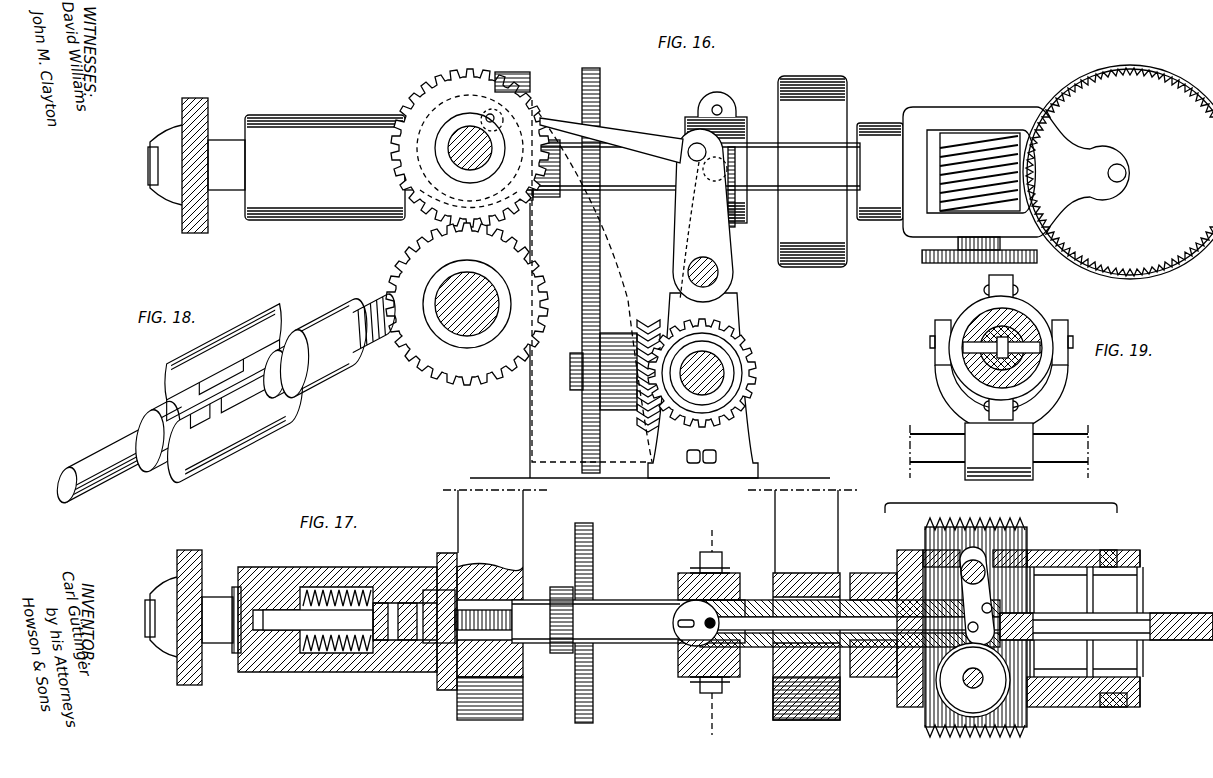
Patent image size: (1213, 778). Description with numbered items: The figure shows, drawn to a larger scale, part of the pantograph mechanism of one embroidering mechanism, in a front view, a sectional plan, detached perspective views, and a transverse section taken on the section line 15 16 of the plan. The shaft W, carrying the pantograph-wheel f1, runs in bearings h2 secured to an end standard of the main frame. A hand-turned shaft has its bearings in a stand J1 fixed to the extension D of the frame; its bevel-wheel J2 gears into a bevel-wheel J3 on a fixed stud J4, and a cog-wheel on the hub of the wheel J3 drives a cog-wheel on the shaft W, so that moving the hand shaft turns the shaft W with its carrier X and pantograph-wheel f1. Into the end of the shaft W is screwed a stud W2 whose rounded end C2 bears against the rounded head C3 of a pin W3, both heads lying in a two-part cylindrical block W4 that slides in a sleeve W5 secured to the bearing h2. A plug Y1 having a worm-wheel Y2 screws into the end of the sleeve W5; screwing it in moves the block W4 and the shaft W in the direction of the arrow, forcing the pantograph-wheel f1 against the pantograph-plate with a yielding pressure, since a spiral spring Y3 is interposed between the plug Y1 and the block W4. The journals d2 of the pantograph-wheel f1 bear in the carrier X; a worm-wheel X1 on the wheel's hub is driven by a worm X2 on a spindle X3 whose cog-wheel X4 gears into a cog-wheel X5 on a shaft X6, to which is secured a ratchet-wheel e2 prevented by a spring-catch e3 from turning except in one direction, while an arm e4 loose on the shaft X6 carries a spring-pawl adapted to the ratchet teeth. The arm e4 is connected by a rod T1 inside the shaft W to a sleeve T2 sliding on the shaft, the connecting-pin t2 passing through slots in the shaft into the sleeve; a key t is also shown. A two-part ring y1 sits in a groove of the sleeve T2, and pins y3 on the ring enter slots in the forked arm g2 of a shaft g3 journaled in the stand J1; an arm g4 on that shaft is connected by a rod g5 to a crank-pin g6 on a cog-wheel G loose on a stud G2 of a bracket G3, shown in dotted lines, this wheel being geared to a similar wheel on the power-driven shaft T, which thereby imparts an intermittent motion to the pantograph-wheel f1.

In FIG. 16, the worm-wheel Y2 is at (178, 153).
In FIG. 17, the worm-wheel Y2 is at (173, 606).
In FIG. 16, the plug Y1 is at (238, 172).
In FIG. 17, the plug Y1 is at (221, 620).
In FIG. 17, the spiral spring Y3 is at (337, 623).
In FIG. 16, the sleeve W5 is at (325, 167).
In FIG. 17, the sleeve W5 is at (337, 570).
In FIG. 18, the two-part cylindrical block W4 is at (233, 391).
In FIG. 17, the two-part cylindrical block W4 is at (413, 590).
In FIG. 18, the pin W3 is at (119, 457).
In FIG. 17, the pin W3 is at (318, 620).
In FIG. 18, the stud W2 is at (337, 340).
In FIG. 16, the shaft W is at (654, 171).
In FIG. 19, the shaft W is at (1026, 322).
In FIG. 17, the shaft W is at (628, 620).
In FIG. 18, the rounded head C3 is at (157, 420).
In FIG. 17, the rounded head C3 is at (380, 621).
In FIG. 18, the rounded end C2 is at (286, 369).
In FIG. 17, the rounded end C2 is at (407, 621).
In FIG. 16, the stud G2 is at (470, 148).
In FIG. 16, the cog-wheel G is at (470, 148).
In FIG. 16, the bracket G3 is at (538, 323).
In FIG. 16, the crank-pin g6 is at (497, 115).
In FIG. 16, the rod g5 is at (611, 140).
In FIG. 16, the arm g4 is at (703, 215).
In FIG. 16, the shaft g3 is at (598, 312).
In FIG. 19, the shaft g3 is at (999, 451).
In FIG. 16, the arm g2 is at (600, 96).
In FIG. 19, the arm g2 is at (1004, 375).
In FIG. 17, the arm g2 is at (593, 548).
In FIG. 16, the bearings h2 is at (522, 92).
In FIG. 17, the bearings h2 is at (648, 605).
In FIG. 16, the shaft T is at (467, 304).
In FIG. 17, the rod T1 is at (836, 623).
In FIG. 19, the sleeve T2 is at (978, 320).
In FIG. 17, the sleeve T2 is at (735, 588).
In FIG. 19, the key t is at (996, 353).
In FIG. 19, the connecting-pin t2 is at (1040, 347).
In FIG. 17, the connecting-pin t2 is at (600, 670).
In FIG. 19, the two-part ring y1 is at (998, 348).
In FIG. 17, the two-part ring y1 is at (728, 568).
In FIG. 17, the pins y3 is at (728, 694).
In FIG. 16, the stand J1 is at (750, 438).
In FIG. 16, the bevel-wheel J2 is at (757, 374).
In FIG. 16, the bevel-wheel J3 is at (648, 320).
In FIG. 16, the fixed stud J4 is at (565, 371).
In FIG. 16, the extension D is at (650, 488).
In FIG. 16, the carrier X is at (1016, 172).
In FIG. 17, the carrier X is at (996, 596).
In FIG. 16, the worm-wheel X1 is at (1119, 172).
In FIG. 17, the worm-wheel X1 is at (1166, 690).
In FIG. 16, the worm X2 is at (962, 150).
In FIG. 17, the worm X2 is at (985, 677).
In FIG. 16, the spindle X3 is at (982, 234).
In FIG. 17, the spindle X3 is at (973, 680).
In FIG. 16, the cog-wheel X4 is at (966, 258).
In FIG. 17, the cog-wheel X4 is at (1008, 724).
In FIG. 17, the cog-wheel X5 is at (1004, 545).
In FIG. 17, the shaft X6 is at (935, 550).
In FIG. 17, the ratchet-wheel e2 is at (961, 570).
In FIG. 17, the spring-catch e3 is at (992, 566).
In FIG. 17, the arm e4 is at (979, 606).
In FIG. 17, the journals d2 is at (1112, 552).
In FIG. 16, the pantograph-wheel f1 is at (1130, 66).
In FIG. 17, the pantograph-wheel f1 is at (1173, 613).
In FIG. 17, the section line 15 is at (712, 532).
In FIG. 17, the section line 16 is at (712, 723).